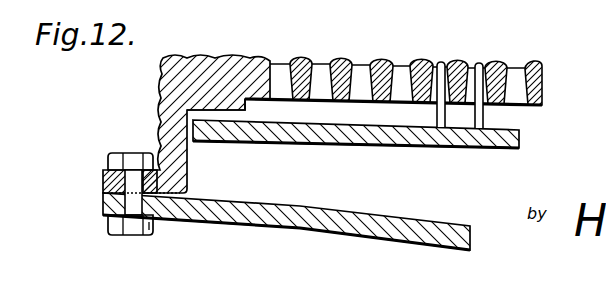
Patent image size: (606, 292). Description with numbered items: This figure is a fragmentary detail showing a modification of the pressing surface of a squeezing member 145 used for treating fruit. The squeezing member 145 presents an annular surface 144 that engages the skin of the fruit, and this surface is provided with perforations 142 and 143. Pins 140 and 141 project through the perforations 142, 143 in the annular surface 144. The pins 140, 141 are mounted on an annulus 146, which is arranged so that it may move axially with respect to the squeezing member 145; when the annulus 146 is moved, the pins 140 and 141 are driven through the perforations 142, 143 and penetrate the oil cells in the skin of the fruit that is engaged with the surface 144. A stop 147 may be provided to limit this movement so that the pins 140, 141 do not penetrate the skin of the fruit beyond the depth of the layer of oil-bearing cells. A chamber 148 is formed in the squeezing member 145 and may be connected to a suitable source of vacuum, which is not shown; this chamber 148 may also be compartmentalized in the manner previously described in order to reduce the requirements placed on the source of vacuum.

The pin 140 is at (483, 64).
The pin 141 is at (441, 62).
The perforation 142 is at (501, 66).
The perforation 143 is at (454, 63).
The annular surface 144 is at (343, 58).
The squeezing member 145 is at (142, 152).
The annulus 146 is at (521, 130).
The stop 147 is at (246, 106).
The chamber 148 is at (278, 198).